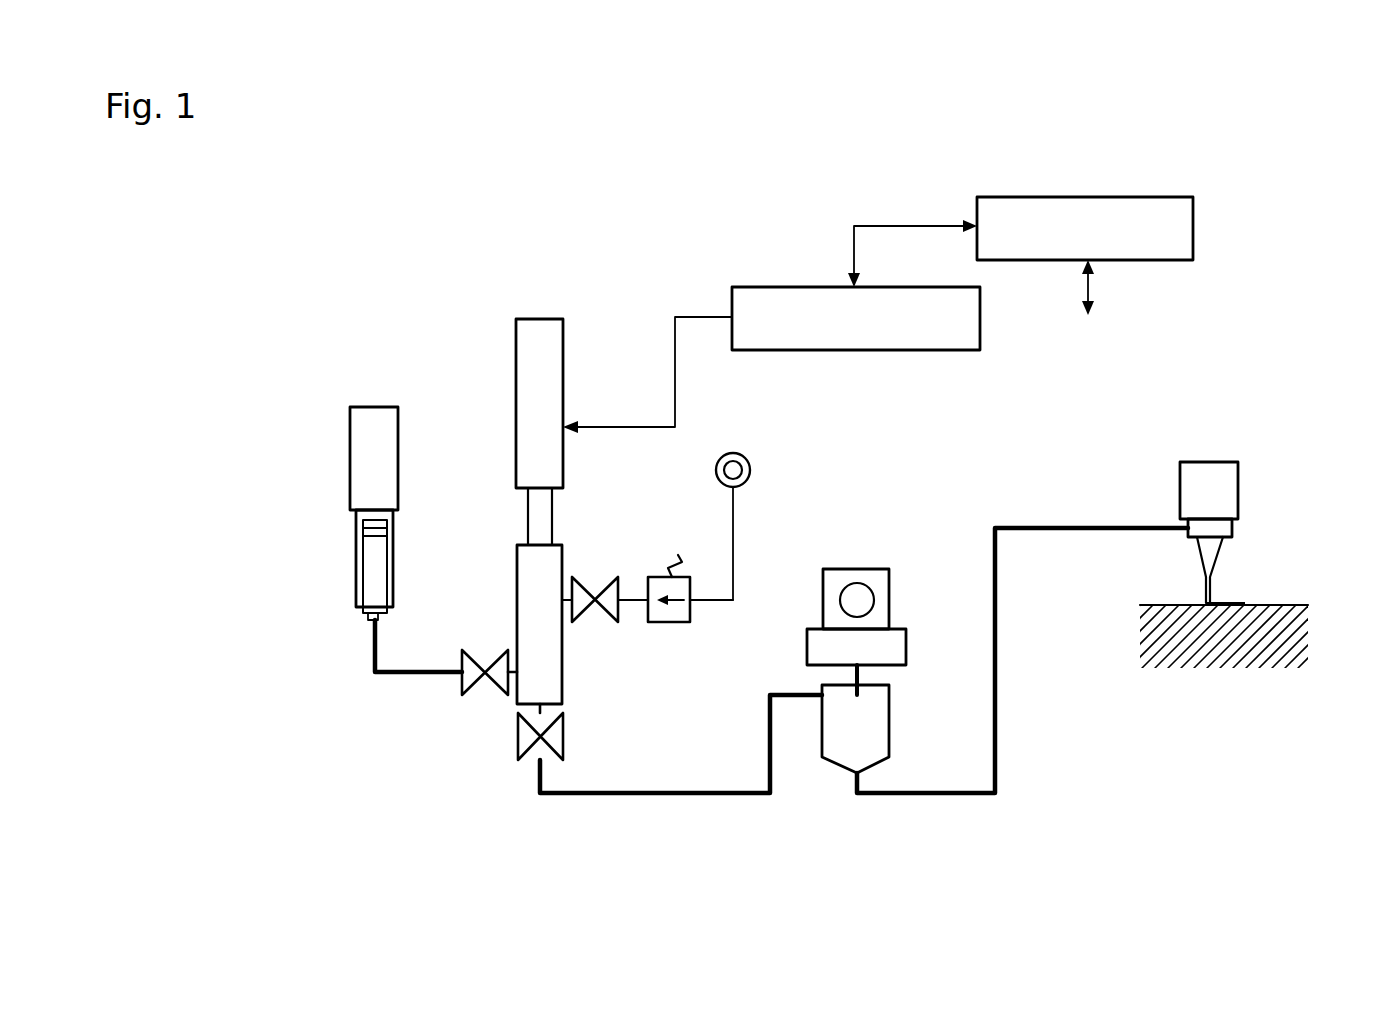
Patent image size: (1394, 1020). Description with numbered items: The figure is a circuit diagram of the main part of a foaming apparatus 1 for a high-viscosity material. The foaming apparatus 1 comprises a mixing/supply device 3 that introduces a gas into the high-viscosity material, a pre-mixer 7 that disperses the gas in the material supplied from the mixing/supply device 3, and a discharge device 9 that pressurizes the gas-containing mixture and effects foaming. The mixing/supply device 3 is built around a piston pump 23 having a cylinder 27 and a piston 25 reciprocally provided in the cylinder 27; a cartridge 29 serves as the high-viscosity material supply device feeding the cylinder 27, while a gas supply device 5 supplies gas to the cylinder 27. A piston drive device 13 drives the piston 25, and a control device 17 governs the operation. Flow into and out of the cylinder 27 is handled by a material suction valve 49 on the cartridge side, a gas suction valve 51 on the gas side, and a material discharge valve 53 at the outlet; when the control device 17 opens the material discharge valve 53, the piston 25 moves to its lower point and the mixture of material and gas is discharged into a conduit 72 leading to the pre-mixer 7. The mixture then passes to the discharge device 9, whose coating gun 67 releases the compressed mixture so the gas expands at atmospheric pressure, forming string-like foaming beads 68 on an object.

The foaming apparatus 1 is at (1060, 881).
The mixing/supply device 3 is at (693, 889).
The gas supply device 5 is at (750, 463).
The pre-mixer 7 is at (888, 600).
The discharge device 9 is at (1375, 393).
The piston drive device 13 is at (910, 350).
The control device 17 is at (1085, 197).
The piston pump 23 is at (594, 338).
The piston 25 is at (528, 510).
The cylinder 27 is at (563, 385).
The cartridge 29 is at (373, 572).
The material suction valve 49 is at (462, 684).
The gas suction valve 51 is at (600, 622).
The material discharge valve 53 is at (555, 745).
The coating gun 67 is at (369, 407).
The foaming beads 68 is at (1215, 592).
The conduit 72 is at (655, 790).